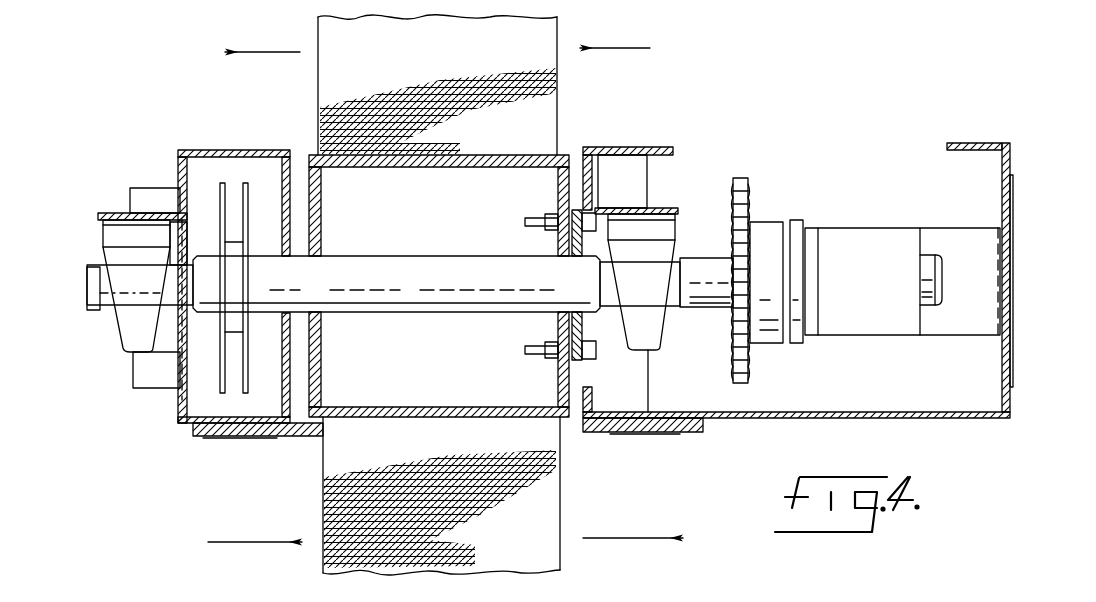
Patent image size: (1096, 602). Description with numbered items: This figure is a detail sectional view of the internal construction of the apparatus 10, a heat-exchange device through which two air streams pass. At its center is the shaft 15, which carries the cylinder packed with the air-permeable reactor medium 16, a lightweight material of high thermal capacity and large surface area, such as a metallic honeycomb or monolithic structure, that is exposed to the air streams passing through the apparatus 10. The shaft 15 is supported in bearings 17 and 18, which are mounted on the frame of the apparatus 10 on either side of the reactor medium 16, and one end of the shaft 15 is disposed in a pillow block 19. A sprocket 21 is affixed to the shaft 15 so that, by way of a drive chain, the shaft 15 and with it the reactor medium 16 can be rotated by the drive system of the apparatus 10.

The apparatus 10 is at (683, 128).
The shaft 15 is at (475, 303).
The reactor medium 16 is at (549, 115).
The bearing 17 is at (133, 333).
The bearing 18 is at (656, 330).
The pillow block 19 is at (867, 238).
The sprocket 21 is at (748, 193).